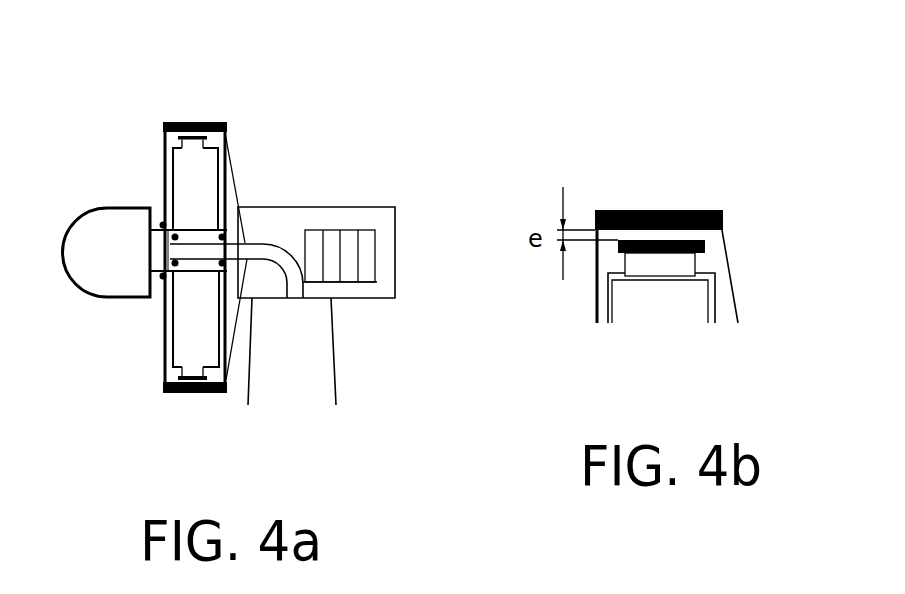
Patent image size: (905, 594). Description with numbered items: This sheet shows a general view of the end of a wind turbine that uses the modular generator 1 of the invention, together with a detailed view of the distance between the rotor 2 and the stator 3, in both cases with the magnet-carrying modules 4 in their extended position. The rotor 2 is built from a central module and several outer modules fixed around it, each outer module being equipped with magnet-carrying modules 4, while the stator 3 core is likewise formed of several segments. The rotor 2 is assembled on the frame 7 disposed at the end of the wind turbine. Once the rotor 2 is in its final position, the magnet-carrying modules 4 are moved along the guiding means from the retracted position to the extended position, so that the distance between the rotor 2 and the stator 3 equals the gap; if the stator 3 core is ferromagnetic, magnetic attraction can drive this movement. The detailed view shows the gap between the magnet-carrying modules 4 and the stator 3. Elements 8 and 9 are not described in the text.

In FIG. 4a, the generator 1 is at (116, 137).
In FIG. 4a, the rotor 2 is at (228, 167).
In FIG. 4b, the rotor 2 is at (608, 295).
In FIG. 4a, the stator 3 is at (219, 123).
In FIG. 4b, the stator 3 is at (722, 252).
In FIG. 4a, the magnet-carrying modules 4 is at (186, 125).
In FIG. 4b, the magnet-carrying modules 4 is at (647, 240).
In FIG. 4a, the frame 7 is at (287, 263).
In FIG. 4a, the body 8 is at (313, 358).
In FIG. 4a, the dome cap 9 is at (85, 250).